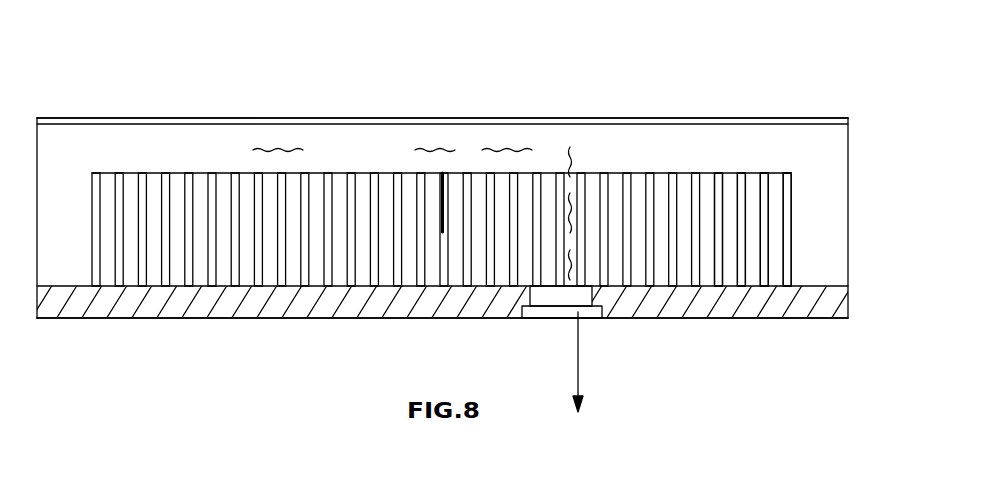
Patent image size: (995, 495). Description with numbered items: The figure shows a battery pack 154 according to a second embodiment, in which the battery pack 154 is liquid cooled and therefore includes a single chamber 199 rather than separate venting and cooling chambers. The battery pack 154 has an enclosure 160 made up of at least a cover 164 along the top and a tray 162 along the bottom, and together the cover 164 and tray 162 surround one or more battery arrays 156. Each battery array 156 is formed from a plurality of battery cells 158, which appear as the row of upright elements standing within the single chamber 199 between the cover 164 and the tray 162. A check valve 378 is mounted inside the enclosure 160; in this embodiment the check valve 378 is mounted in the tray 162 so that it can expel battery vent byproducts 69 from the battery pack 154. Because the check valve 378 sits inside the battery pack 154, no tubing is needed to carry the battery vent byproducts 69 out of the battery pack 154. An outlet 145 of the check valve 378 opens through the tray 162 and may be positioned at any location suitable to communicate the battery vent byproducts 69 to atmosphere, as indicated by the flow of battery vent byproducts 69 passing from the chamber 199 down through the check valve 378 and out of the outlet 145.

The battery pack 154 is at (442, 164).
The enclosure 160 is at (831, 106).
The cover 164 is at (735, 118).
The tray 162 is at (833, 318).
The battery array 156 is at (647, 184).
The battery cells 158 is at (728, 182).
The single chamber 199 is at (588, 157).
The battery vent byproducts 69 is at (413, 150).
The outlet 145 is at (550, 318).
The check valve 378 is at (592, 295).